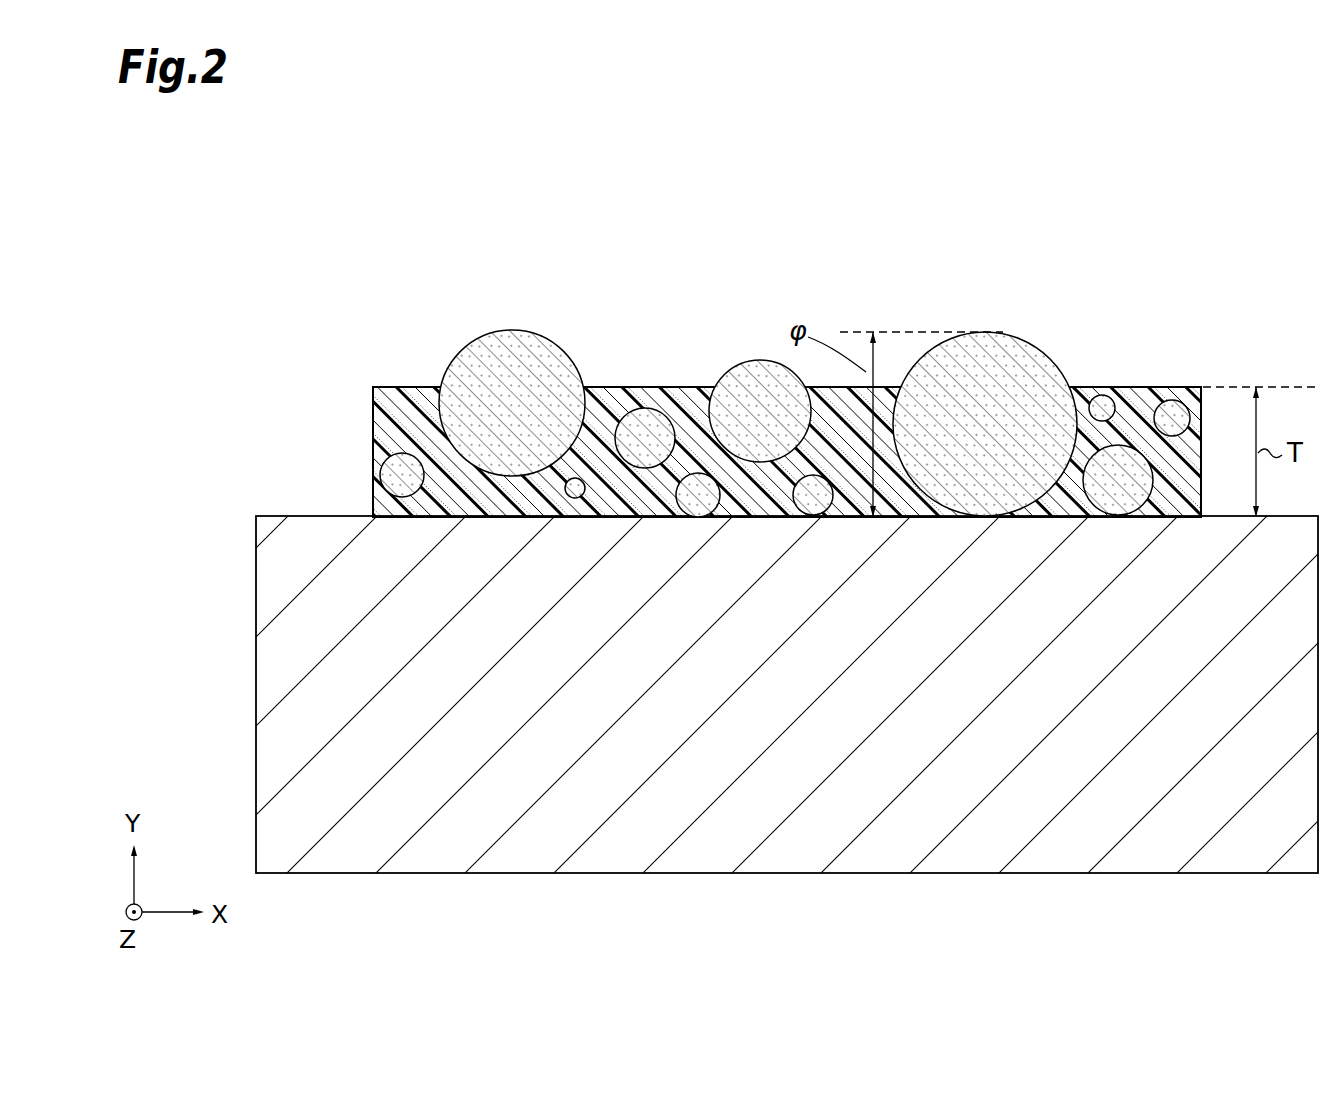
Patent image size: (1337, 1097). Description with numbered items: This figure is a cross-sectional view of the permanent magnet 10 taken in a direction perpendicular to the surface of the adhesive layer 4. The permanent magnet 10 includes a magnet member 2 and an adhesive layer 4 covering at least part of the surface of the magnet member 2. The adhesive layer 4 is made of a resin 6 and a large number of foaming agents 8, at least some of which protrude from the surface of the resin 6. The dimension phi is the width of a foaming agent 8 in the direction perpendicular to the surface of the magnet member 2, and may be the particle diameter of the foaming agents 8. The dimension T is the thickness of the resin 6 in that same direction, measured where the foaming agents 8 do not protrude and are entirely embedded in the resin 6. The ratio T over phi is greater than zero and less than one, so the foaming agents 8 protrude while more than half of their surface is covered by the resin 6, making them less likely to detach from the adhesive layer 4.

The magnet member 2 is at (268, 662).
The adhesive layer 4 is at (337, 332).
The resin 6 is at (395, 393).
The foaming agents 8 is at (403, 455).
The permanent magnet 10 is at (1196, 178).